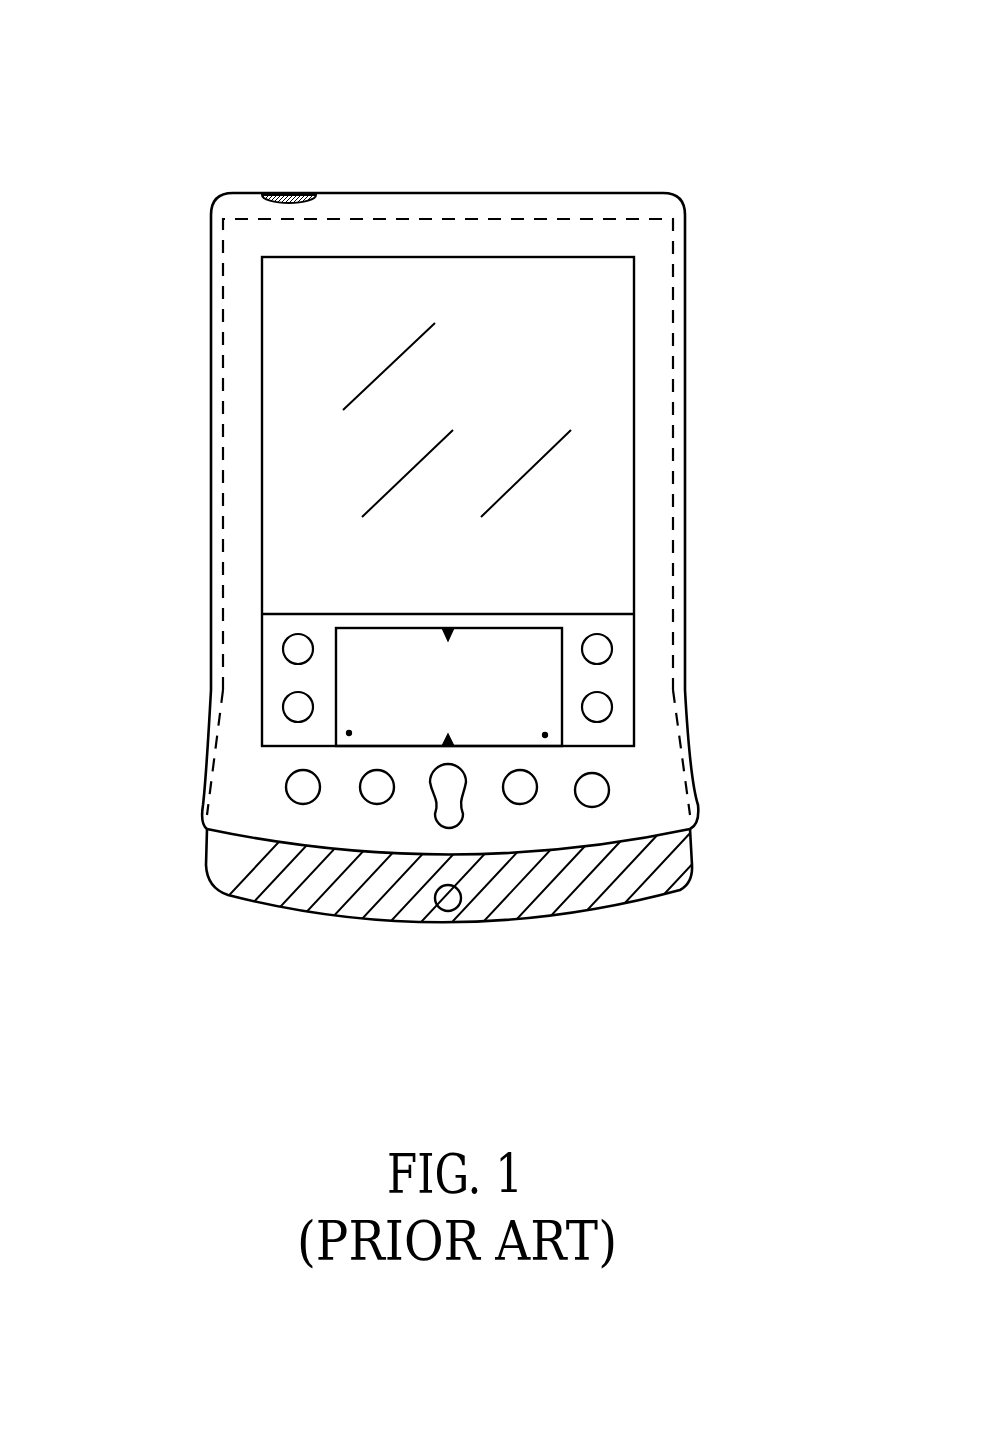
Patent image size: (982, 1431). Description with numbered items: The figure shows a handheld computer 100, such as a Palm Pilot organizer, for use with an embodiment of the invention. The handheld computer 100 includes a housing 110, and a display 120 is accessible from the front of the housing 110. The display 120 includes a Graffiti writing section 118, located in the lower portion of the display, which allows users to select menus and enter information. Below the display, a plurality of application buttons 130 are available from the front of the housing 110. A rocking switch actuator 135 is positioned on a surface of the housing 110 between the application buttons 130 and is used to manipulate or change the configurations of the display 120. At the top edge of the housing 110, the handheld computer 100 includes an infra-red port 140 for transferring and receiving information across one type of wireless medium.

The handheld computer 100 is at (672, 172).
The housing 110 is at (688, 325).
The Graffiti writing section 118 is at (487, 663).
The display 120 is at (320, 445).
The application buttons 130 is at (303, 787).
The rocking switch actuator 135 is at (447, 818).
The infra-red port 140 is at (290, 190).